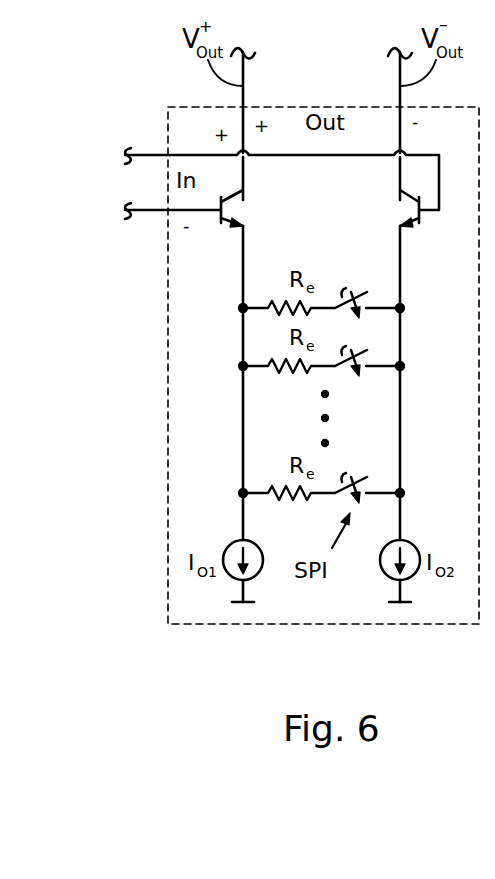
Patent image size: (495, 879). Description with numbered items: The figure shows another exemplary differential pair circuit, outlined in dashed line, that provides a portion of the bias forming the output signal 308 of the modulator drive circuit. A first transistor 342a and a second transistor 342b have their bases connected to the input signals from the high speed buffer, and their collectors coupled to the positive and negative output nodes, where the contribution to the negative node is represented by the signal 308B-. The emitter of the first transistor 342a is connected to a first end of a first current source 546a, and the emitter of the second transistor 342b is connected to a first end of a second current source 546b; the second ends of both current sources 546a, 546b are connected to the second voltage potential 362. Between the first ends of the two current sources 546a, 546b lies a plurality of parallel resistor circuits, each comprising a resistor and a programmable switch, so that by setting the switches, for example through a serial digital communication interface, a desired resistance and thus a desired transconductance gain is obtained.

The output signal 308 is at (345, 89).
The signal 308B- is at (150, 212).
The first transistor 342a is at (236, 205).
The second transistor 342b is at (404, 212).
The first current source 546a is at (228, 546).
The second current source 546b is at (415, 546).
The second voltage potential 362 is at (243, 606).